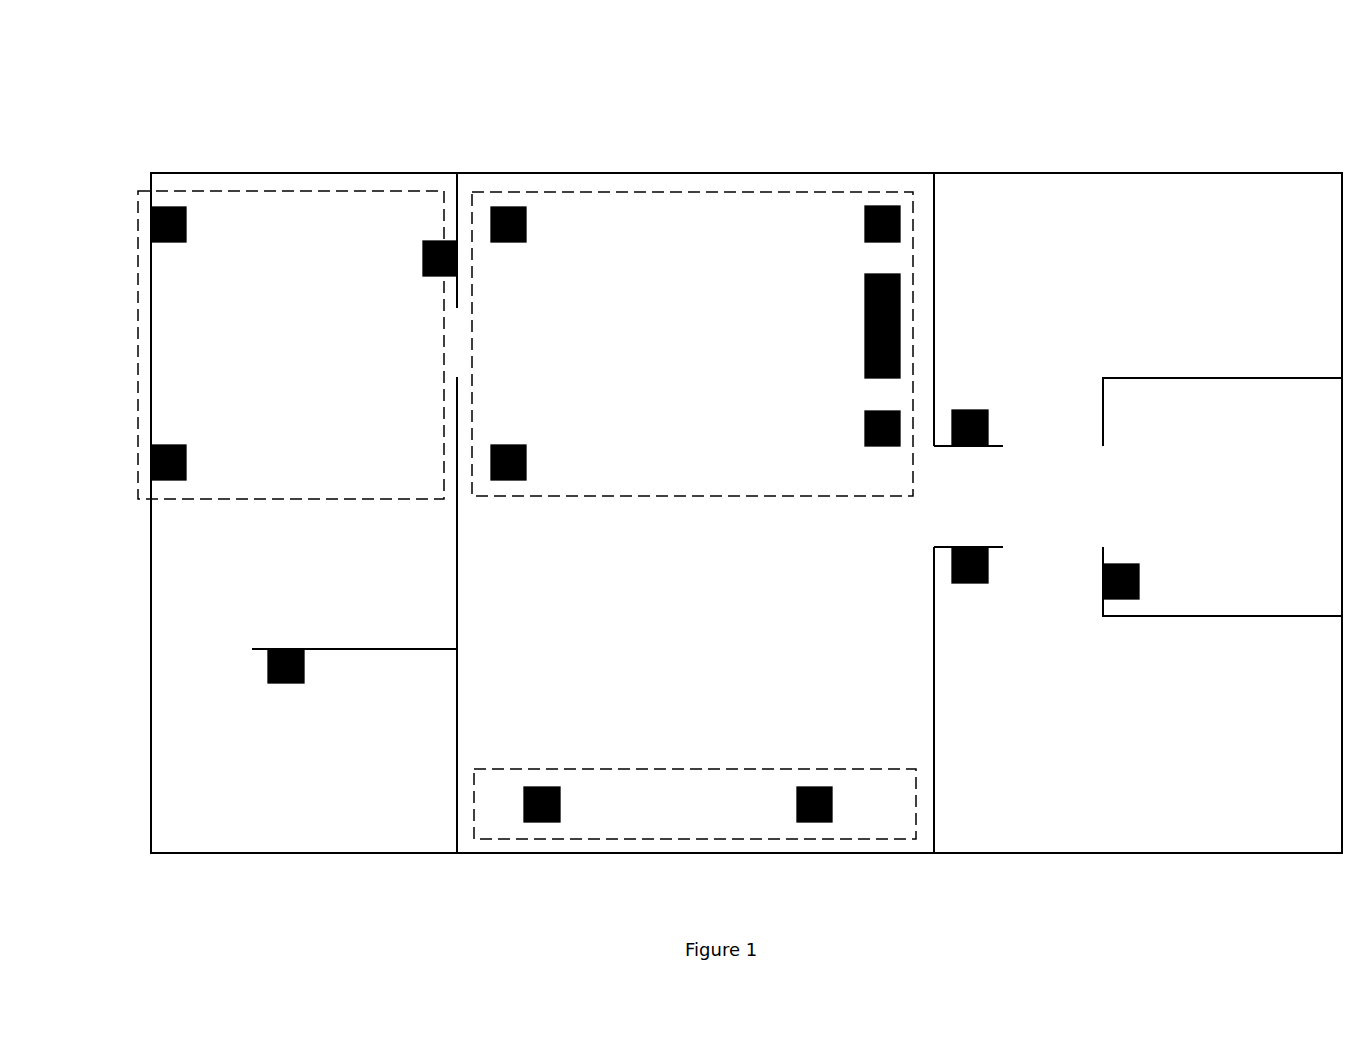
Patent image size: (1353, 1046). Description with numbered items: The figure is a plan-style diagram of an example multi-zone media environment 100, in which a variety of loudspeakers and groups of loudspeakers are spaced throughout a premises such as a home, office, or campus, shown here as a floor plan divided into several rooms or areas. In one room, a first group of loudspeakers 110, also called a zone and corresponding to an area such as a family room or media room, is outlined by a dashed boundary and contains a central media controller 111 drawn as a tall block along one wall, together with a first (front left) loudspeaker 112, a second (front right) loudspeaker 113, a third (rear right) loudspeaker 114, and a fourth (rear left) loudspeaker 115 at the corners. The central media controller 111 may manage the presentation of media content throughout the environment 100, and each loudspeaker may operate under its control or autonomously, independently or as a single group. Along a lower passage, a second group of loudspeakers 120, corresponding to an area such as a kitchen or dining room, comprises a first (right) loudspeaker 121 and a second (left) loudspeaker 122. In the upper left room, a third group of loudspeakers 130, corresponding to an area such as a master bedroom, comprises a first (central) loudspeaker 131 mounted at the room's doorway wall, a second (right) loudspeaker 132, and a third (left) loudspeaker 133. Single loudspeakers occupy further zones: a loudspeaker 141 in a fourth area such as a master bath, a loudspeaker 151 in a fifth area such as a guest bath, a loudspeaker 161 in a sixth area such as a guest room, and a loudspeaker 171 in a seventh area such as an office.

The multi-zone media environment 100 is at (176, 100).
The first group of loudspeakers 110 is at (695, 192).
The central media controller 111 is at (865, 331).
The first loudspeaker 112 is at (865, 229).
The second loudspeaker 113 is at (865, 432).
The third loudspeaker 114 is at (526, 221).
The fourth loudspeaker 115 is at (526, 460).
The second group of loudspeakers 120 is at (688, 769).
The first loudspeaker 121 is at (541, 787).
The second loudspeaker 122 is at (814, 787).
The third group of loudspeakers 130 is at (322, 191).
The first loudspeaker 131 is at (423, 258).
The second loudspeaker 132 is at (186, 219).
The third loudspeaker 133 is at (186, 460).
The loudspeaker 141 is at (290, 683).
The loudspeaker 151 is at (1139, 581).
The loudspeaker 161 is at (964, 410).
The loudspeaker 171 is at (970, 583).